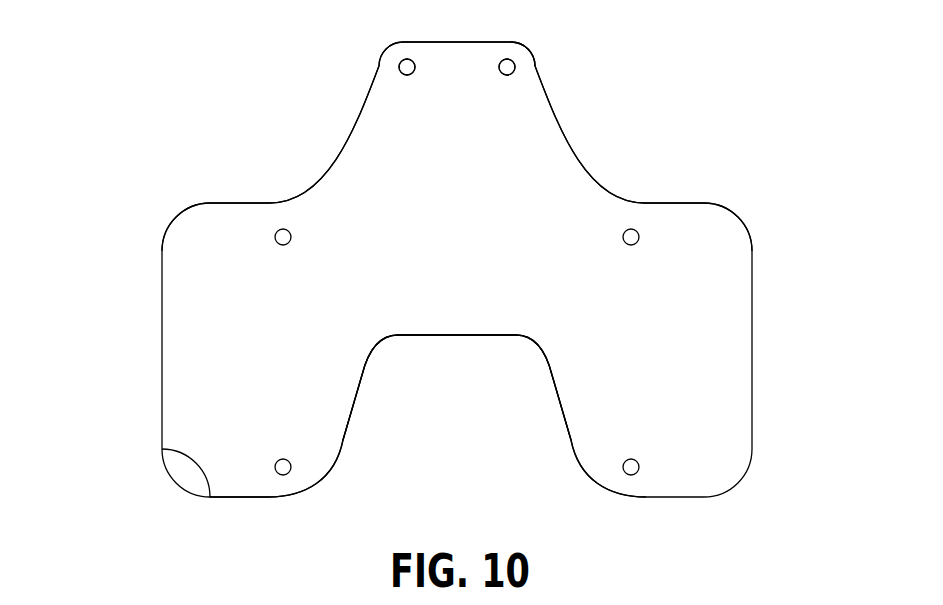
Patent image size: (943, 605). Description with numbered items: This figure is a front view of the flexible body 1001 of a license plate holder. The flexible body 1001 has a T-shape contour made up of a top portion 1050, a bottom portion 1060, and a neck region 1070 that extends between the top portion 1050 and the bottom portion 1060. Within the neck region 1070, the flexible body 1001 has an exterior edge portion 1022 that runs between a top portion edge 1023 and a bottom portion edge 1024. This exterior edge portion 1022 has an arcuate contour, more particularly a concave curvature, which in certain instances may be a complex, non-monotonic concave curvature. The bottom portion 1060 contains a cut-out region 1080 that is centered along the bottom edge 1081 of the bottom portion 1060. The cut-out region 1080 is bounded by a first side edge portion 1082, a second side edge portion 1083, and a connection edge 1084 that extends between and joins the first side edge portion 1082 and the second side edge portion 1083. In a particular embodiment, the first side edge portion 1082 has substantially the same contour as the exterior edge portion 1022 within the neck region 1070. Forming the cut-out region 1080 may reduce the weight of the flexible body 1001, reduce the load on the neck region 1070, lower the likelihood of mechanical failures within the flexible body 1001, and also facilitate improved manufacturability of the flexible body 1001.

The flexible body 1001 is at (503, 269).
The top portion 1050 is at (351, 55).
The top portion edge 1023 is at (579, 44).
The neck region 1070 is at (321, 127).
The exterior edge portion 1022 is at (628, 134).
The bottom portion 1060 is at (154, 207).
The bottom portion edge 1024 is at (733, 196).
The cut-out region 1080 is at (457, 445).
The connection edge 1084 is at (444, 357).
The second side edge portion 1083 is at (366, 399).
The first side edge portion 1082 is at (546, 400).
The bottom edge 1081 is at (200, 509).